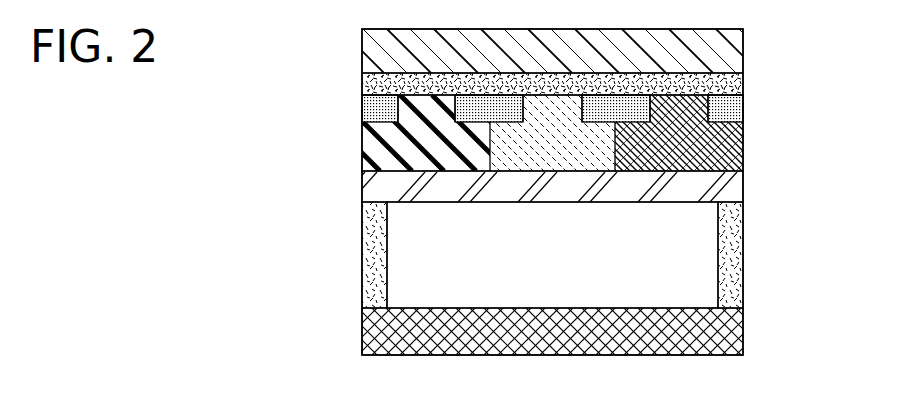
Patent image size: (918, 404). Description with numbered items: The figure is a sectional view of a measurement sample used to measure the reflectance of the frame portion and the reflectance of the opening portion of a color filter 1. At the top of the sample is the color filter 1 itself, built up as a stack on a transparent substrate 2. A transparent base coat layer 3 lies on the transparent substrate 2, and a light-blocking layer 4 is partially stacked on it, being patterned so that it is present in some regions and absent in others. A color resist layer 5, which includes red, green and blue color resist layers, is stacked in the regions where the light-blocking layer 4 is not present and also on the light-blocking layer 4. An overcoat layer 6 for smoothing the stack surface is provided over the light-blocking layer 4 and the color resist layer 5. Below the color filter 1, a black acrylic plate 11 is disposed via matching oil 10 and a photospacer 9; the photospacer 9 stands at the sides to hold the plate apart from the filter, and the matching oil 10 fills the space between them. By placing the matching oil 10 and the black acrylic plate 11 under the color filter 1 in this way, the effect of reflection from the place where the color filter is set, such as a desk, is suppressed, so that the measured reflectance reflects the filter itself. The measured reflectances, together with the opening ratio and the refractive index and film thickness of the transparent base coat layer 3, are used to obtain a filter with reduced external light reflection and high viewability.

The color filter 1 is at (293, 25).
The transparent substrate 2 is at (377, 49).
The transparent base coat layer 3 is at (378, 87).
The light-blocking layer 4 is at (377, 108).
The color resist layer 5 is at (378, 142).
The overcoat layer 6 is at (378, 187).
The photospacer 9 is at (372, 250).
The matching oil 10 is at (443, 272).
The black acrylic plate 11 is at (377, 333).